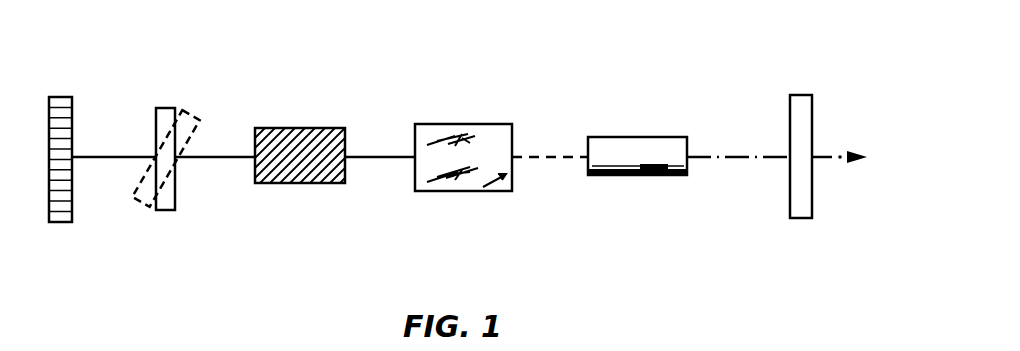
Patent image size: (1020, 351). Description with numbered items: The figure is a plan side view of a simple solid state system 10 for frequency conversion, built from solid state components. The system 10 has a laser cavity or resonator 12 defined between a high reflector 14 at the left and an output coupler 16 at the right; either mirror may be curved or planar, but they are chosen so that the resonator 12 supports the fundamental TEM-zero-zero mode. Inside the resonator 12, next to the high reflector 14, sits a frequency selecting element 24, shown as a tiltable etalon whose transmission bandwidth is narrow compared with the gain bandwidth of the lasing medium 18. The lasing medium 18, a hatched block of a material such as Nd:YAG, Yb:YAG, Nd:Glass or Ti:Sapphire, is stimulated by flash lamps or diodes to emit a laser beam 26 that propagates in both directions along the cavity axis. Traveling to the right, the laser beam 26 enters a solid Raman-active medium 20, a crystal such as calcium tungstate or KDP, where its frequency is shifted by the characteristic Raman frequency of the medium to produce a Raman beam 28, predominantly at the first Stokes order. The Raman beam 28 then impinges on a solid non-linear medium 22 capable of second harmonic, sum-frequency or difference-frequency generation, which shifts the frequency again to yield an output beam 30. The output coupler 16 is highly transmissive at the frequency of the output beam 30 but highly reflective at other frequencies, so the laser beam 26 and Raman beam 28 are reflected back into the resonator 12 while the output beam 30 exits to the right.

The solid state system 10 is at (578, 45).
The laser resonator 12 is at (512, 222).
The high reflector 14 is at (73, 107).
The output coupler 16 is at (800, 95).
The lasing medium 18 is at (293, 183).
The Raman-active medium 20 is at (467, 123).
The non-linear medium 22 is at (655, 175).
The frequency selecting element 24 is at (162, 108).
The laser beam 26 is at (374, 153).
The Raman beam 28 is at (552, 157).
The output beam 30 is at (740, 157).